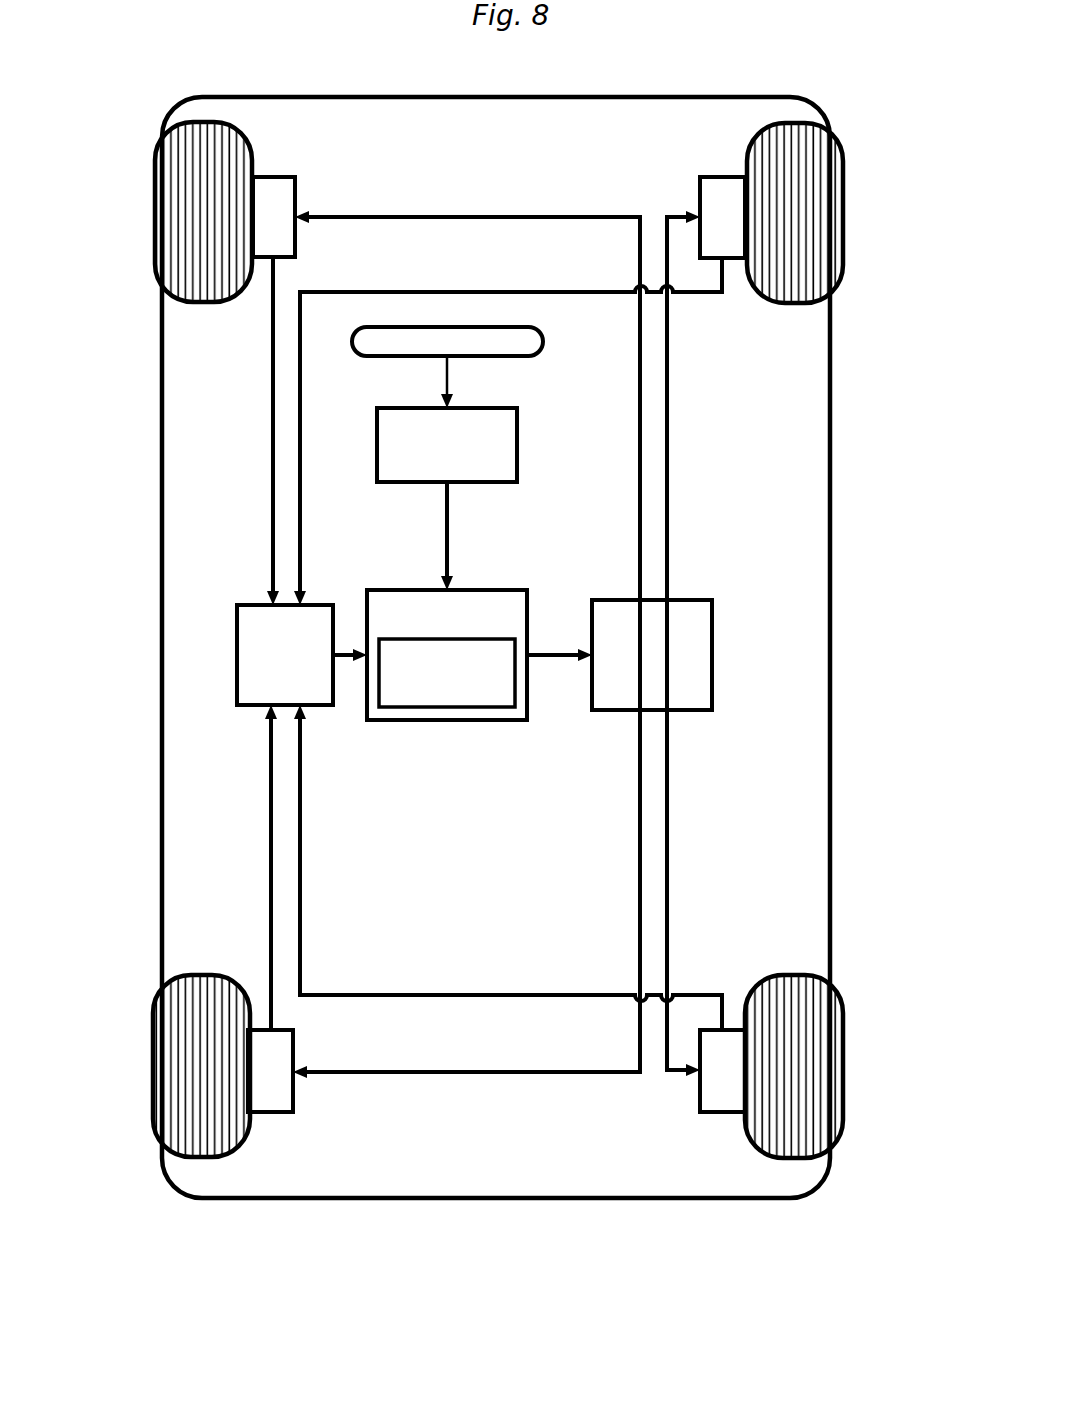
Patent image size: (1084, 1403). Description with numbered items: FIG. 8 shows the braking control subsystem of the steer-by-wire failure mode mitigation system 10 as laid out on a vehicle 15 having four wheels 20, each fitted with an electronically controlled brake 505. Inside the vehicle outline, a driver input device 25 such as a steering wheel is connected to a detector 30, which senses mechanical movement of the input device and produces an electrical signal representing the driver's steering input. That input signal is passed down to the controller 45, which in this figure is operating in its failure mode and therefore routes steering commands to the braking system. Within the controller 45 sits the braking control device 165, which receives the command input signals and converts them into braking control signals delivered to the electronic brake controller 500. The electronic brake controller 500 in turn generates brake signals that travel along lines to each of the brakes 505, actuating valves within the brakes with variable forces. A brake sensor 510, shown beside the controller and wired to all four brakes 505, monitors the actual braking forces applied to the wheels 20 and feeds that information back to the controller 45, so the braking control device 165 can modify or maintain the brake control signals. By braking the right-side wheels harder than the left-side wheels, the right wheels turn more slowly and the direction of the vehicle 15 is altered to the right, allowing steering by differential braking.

The steer-by-wire failure mode mitigation system 10 is at (648, 38).
The vehicle 15 is at (830, 632).
The wheels 20 is at (155, 212).
The driver input device 25 is at (537, 357).
The detector 30 is at (413, 482).
The controller 45 is at (432, 693).
The braking control device 165 is at (408, 710).
The electronic brake controller 500 is at (712, 653).
The electronically controlled brakes 505 is at (275, 175).
The brake sensor 510 is at (250, 603).